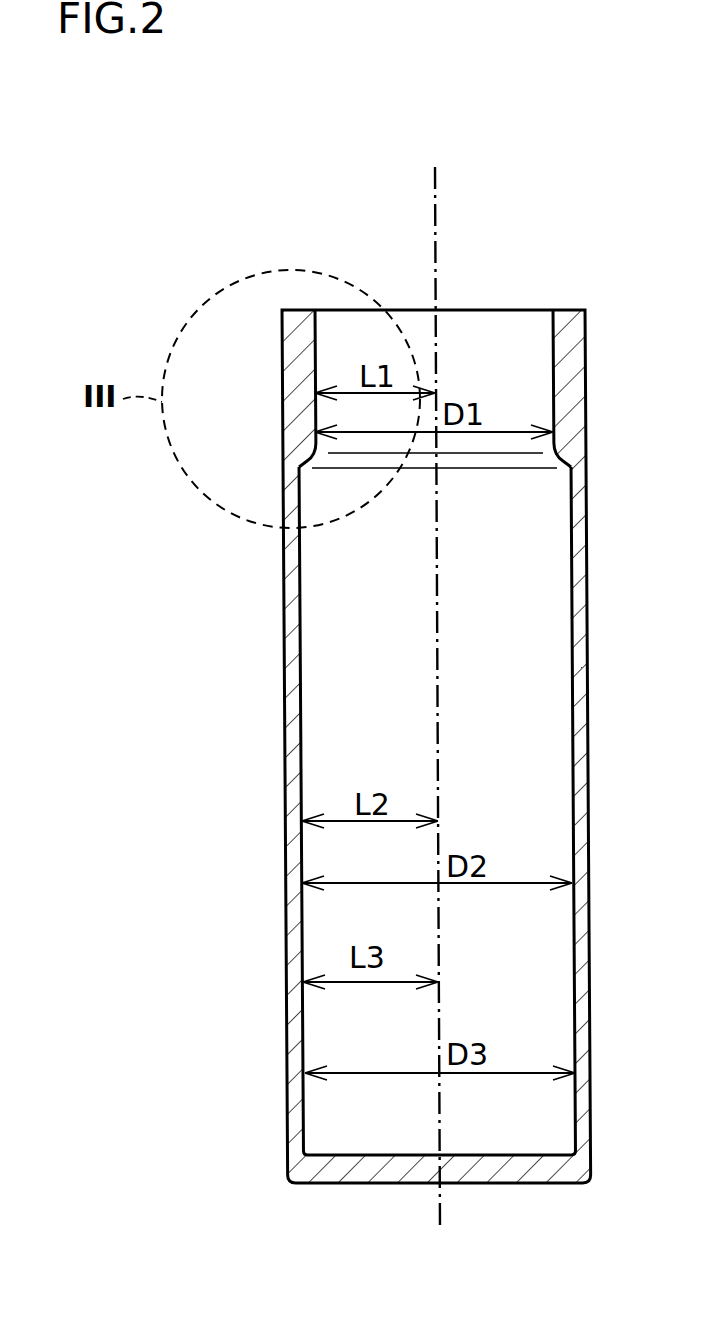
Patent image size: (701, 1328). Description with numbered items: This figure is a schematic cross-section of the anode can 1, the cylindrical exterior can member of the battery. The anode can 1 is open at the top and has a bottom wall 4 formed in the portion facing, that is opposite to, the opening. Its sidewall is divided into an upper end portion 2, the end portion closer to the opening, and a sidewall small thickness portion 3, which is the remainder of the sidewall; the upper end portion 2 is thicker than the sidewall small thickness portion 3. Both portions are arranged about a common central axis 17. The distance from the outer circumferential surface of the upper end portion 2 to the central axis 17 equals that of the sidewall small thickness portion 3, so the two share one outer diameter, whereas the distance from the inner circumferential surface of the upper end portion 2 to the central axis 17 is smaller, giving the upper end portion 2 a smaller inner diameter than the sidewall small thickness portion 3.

The anode can 1 is at (204, 945).
The upper end portion 2 is at (316, 378).
The sidewall small thickness portion 3 is at (284, 761).
The bottom wall 4 is at (500, 1170).
The central axis 17 is at (437, 184).